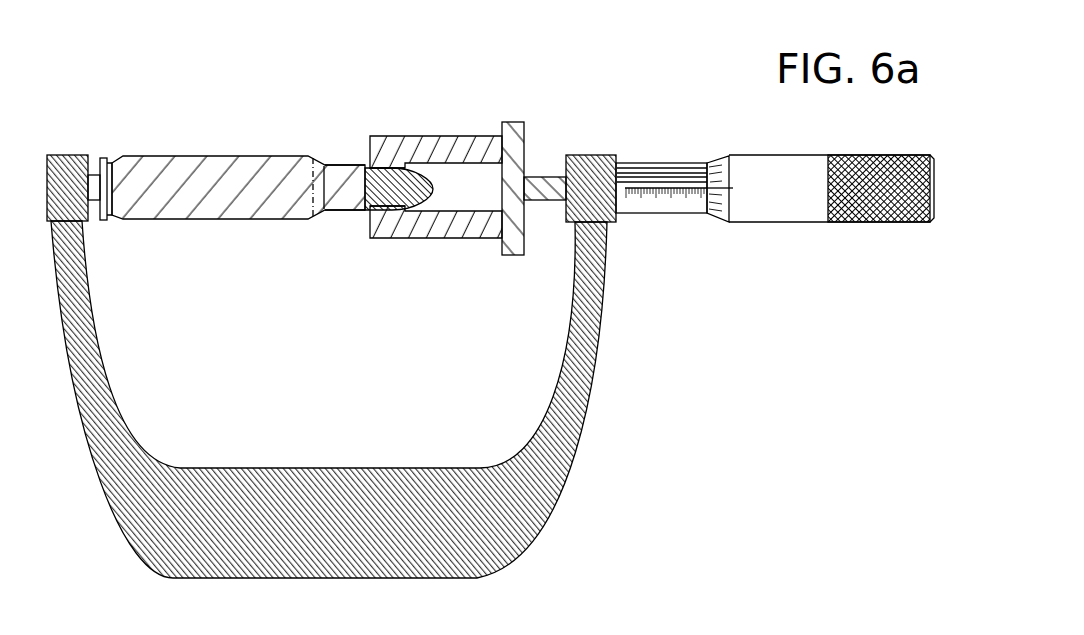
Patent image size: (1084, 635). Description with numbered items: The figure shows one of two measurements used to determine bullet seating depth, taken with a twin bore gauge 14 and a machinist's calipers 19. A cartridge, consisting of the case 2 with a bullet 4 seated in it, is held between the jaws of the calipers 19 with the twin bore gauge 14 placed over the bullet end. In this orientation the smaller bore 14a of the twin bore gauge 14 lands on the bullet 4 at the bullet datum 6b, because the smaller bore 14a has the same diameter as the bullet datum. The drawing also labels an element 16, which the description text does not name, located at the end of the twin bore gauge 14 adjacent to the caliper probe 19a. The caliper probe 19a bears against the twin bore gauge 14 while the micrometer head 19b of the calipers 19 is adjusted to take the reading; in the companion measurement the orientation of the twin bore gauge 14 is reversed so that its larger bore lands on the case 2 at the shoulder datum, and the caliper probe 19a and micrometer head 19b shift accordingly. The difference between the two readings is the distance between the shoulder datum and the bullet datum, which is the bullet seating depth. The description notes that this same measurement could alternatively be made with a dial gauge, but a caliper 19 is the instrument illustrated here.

The case 2 is at (200, 153).
The bullet datum 6b is at (327, 112).
The bullet 4 is at (423, 206).
The twin bore gauge 14 is at (414, 123).
The smaller bore 14a is at (363, 220).
The anvil 16 is at (513, 110).
The machinist's calipers 19 is at (604, 398).
The caliper probe 19a is at (656, 269).
The micrometer head 19b is at (775, 231).